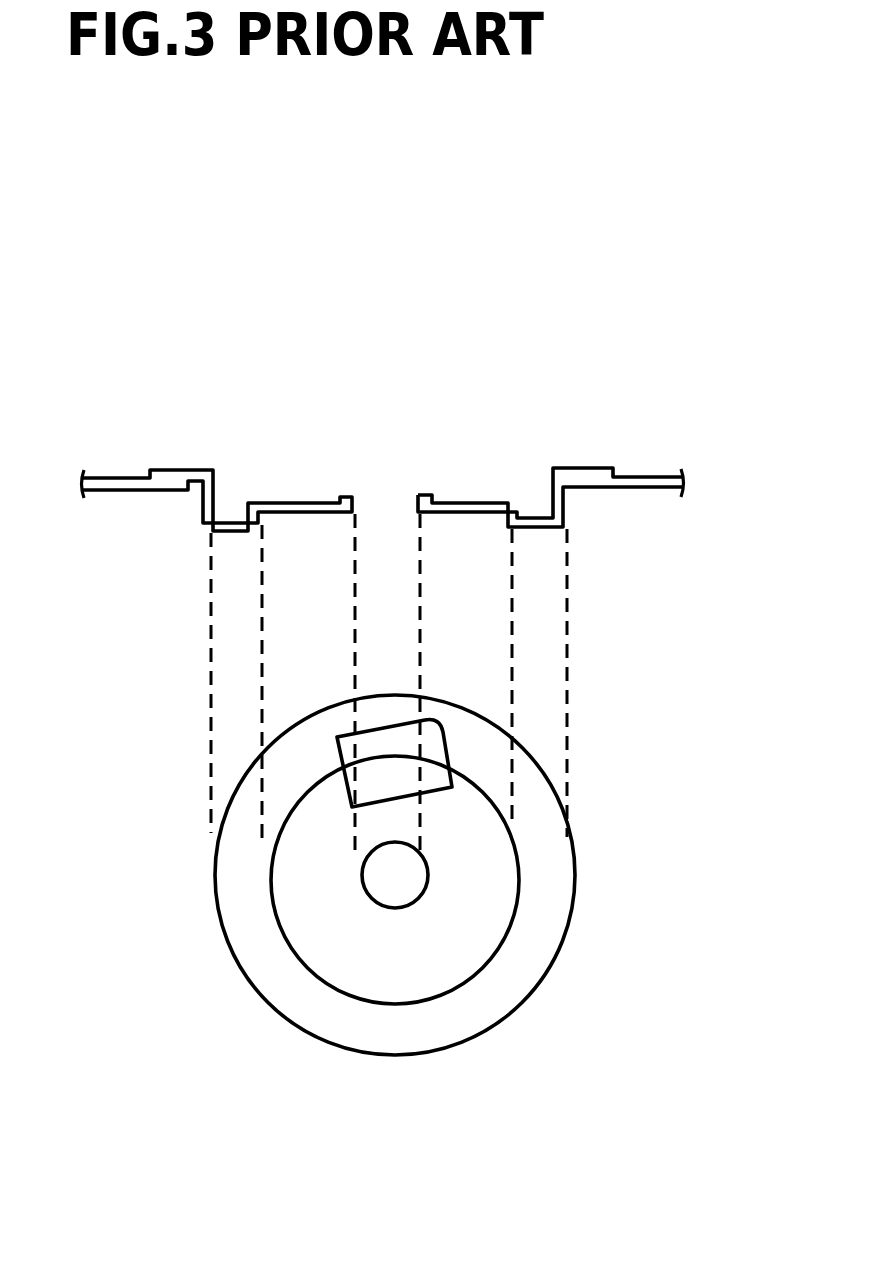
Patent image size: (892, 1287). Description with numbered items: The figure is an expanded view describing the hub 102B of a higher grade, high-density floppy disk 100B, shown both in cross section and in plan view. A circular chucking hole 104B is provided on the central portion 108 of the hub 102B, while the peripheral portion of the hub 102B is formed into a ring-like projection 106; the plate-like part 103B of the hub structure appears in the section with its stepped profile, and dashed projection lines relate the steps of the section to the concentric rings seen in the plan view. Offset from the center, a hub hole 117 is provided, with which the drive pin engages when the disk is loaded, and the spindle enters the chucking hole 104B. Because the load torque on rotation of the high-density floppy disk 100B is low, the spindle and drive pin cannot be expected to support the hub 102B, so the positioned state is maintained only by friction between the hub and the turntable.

The high-density floppy disk 100B is at (632, 337).
The hub 102B is at (576, 518).
The sheet plate 103B is at (638, 477).
The chucking hole 104B is at (390, 513).
The ring-like projection 106 is at (228, 532).
The central portion 108 is at (302, 503).
The hub hole 117 is at (382, 770).